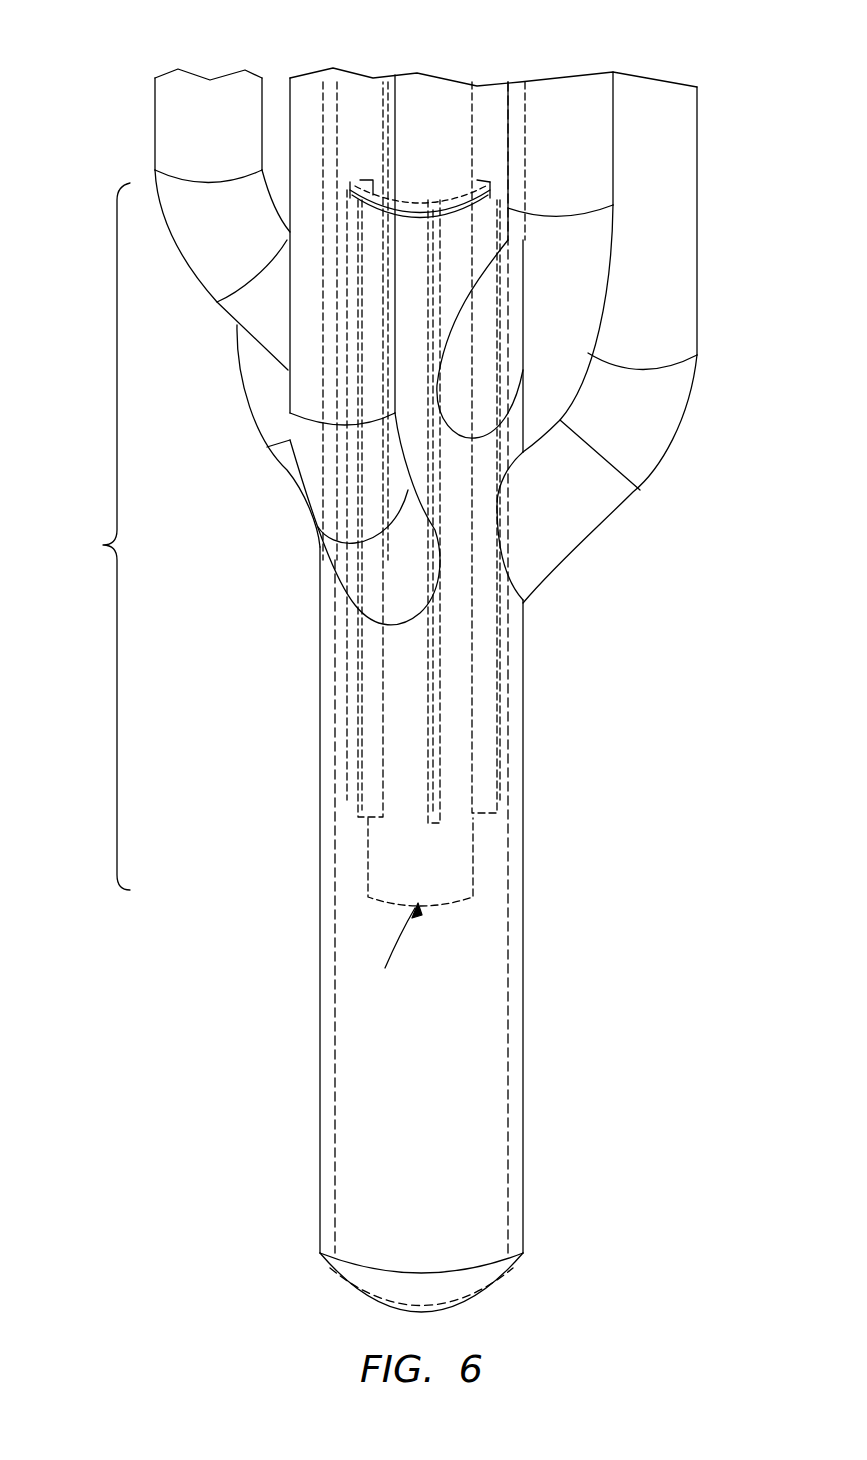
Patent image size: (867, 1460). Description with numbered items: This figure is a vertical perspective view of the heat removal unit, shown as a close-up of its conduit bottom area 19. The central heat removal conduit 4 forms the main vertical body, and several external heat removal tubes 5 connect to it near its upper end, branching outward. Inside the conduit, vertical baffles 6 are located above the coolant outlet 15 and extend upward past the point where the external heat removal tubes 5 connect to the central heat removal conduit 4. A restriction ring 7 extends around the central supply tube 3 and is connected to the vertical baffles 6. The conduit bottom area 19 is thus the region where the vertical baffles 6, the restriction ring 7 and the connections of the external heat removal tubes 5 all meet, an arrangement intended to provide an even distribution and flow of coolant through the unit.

The central supply tube 3 is at (470, 872).
The central heat removal conduit 4 is at (525, 805).
The external heat removal tube 5 is at (178, 135).
The vertical baffles 6 is at (368, 693).
The restriction ring 7 is at (480, 185).
The coolant outlet 15 is at (397, 952).
The conduit bottom area 19 is at (86, 536).